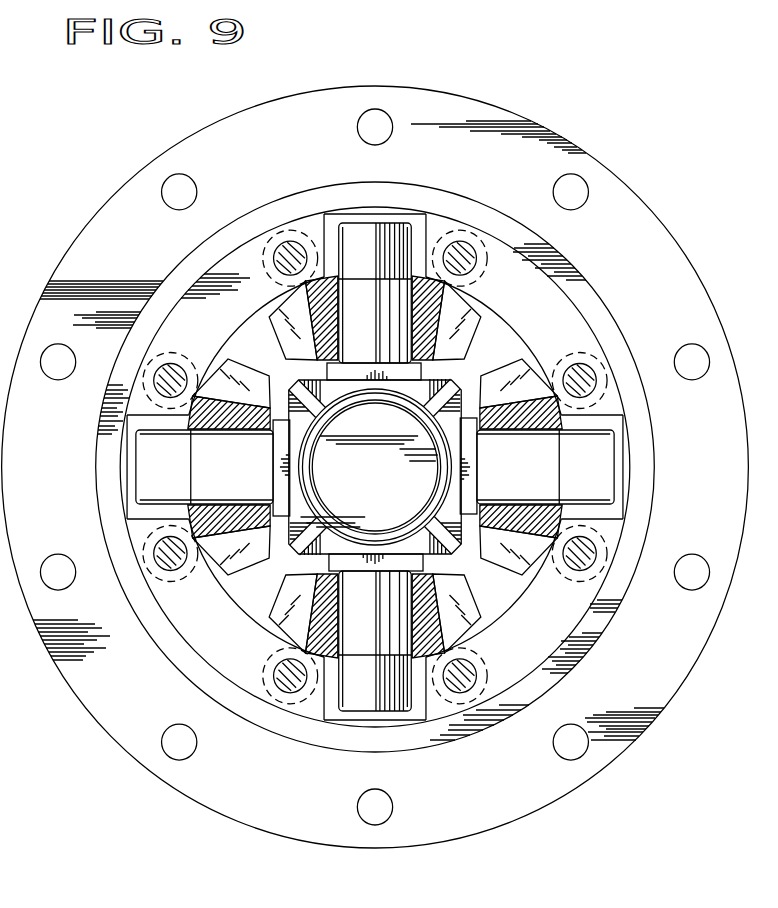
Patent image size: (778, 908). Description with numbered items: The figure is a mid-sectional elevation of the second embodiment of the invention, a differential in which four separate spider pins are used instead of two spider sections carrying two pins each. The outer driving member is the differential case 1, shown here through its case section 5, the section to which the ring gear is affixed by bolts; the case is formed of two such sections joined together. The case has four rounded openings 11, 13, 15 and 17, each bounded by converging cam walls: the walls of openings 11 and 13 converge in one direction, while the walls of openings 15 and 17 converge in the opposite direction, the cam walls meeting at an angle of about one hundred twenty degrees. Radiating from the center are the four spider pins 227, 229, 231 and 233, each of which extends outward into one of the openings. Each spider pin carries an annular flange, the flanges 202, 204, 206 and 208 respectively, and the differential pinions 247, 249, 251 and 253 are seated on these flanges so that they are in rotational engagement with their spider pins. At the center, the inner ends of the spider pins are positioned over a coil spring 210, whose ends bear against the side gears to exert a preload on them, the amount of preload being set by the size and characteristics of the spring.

The differential case 1 is at (628, 157).
The case section 5 is at (283, 838).
The rounded opening 11 is at (333, 234).
The rounded opening 13 is at (357, 722).
The rounded opening 15 is at (128, 445).
The rounded opening 17 is at (615, 510).
The annular flange 202 is at (432, 372).
The annular flange 204 is at (425, 568).
The annular flange 206 is at (280, 430).
The annular flange 208 is at (468, 471).
The coil spring 210 is at (340, 409).
The spider pin 227 is at (388, 323).
The spider pin 229 is at (388, 631).
The spider pin 231 is at (213, 478).
The spider pin 233 is at (555, 478).
The differential pinion 247 is at (452, 301).
The differential pinion 249 is at (440, 647).
The differential pinion 251 is at (205, 395).
The differential pinion 253 is at (537, 378).